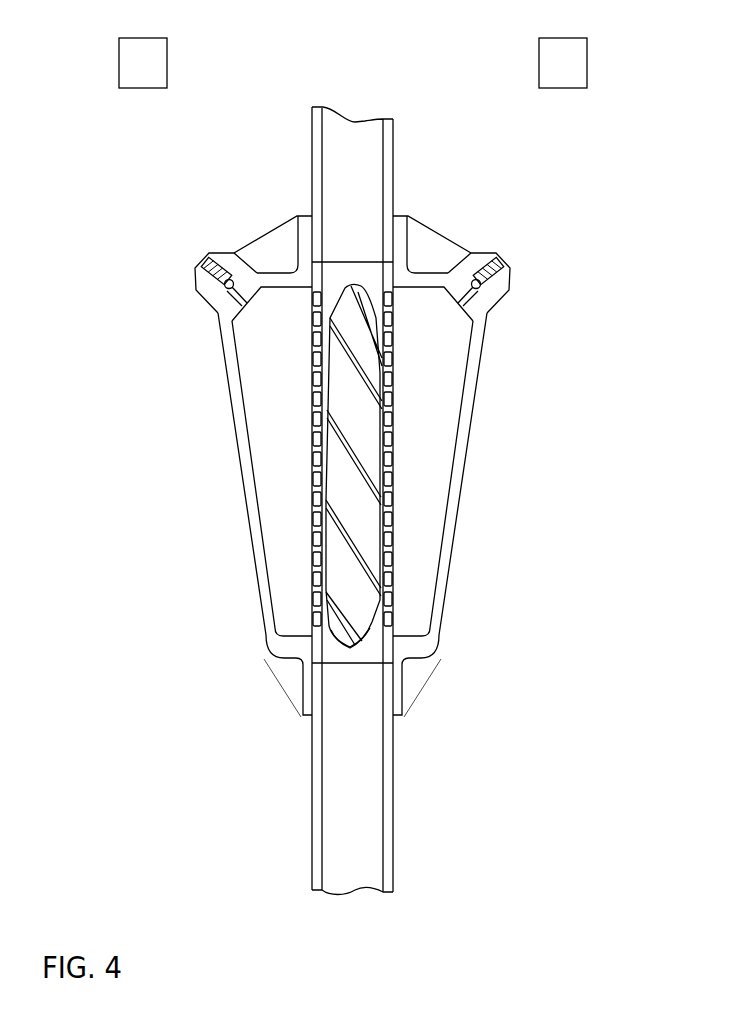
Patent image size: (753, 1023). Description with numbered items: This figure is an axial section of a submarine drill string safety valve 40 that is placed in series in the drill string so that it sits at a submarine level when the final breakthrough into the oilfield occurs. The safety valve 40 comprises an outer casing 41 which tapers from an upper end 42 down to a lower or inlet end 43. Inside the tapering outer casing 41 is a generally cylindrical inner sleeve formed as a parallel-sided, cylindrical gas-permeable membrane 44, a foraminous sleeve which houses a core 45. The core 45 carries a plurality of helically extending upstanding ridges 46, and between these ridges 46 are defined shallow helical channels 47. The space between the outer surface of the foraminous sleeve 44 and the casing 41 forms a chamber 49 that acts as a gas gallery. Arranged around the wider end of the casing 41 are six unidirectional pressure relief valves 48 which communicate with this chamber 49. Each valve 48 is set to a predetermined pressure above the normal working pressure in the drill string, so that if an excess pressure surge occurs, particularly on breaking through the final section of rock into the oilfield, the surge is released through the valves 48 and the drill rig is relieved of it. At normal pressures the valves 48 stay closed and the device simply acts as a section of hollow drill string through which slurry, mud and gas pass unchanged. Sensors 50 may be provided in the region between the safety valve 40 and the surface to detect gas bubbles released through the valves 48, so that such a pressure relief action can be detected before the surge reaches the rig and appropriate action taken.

The safety valve 40 is at (166, 395).
The outer casing 41 is at (437, 592).
The upper end 42 is at (430, 243).
The lower or inlet end 43 is at (300, 693).
The gas-permeable membrane 44 is at (393, 444).
The core 45 is at (348, 637).
The helically extending upstanding ridges 46 is at (352, 497).
The helical channels 47 is at (352, 565).
The unidirectional pressure relief valves 48 is at (198, 302).
The chamber 49 is at (452, 384).
The sensors 50 is at (142, 73).